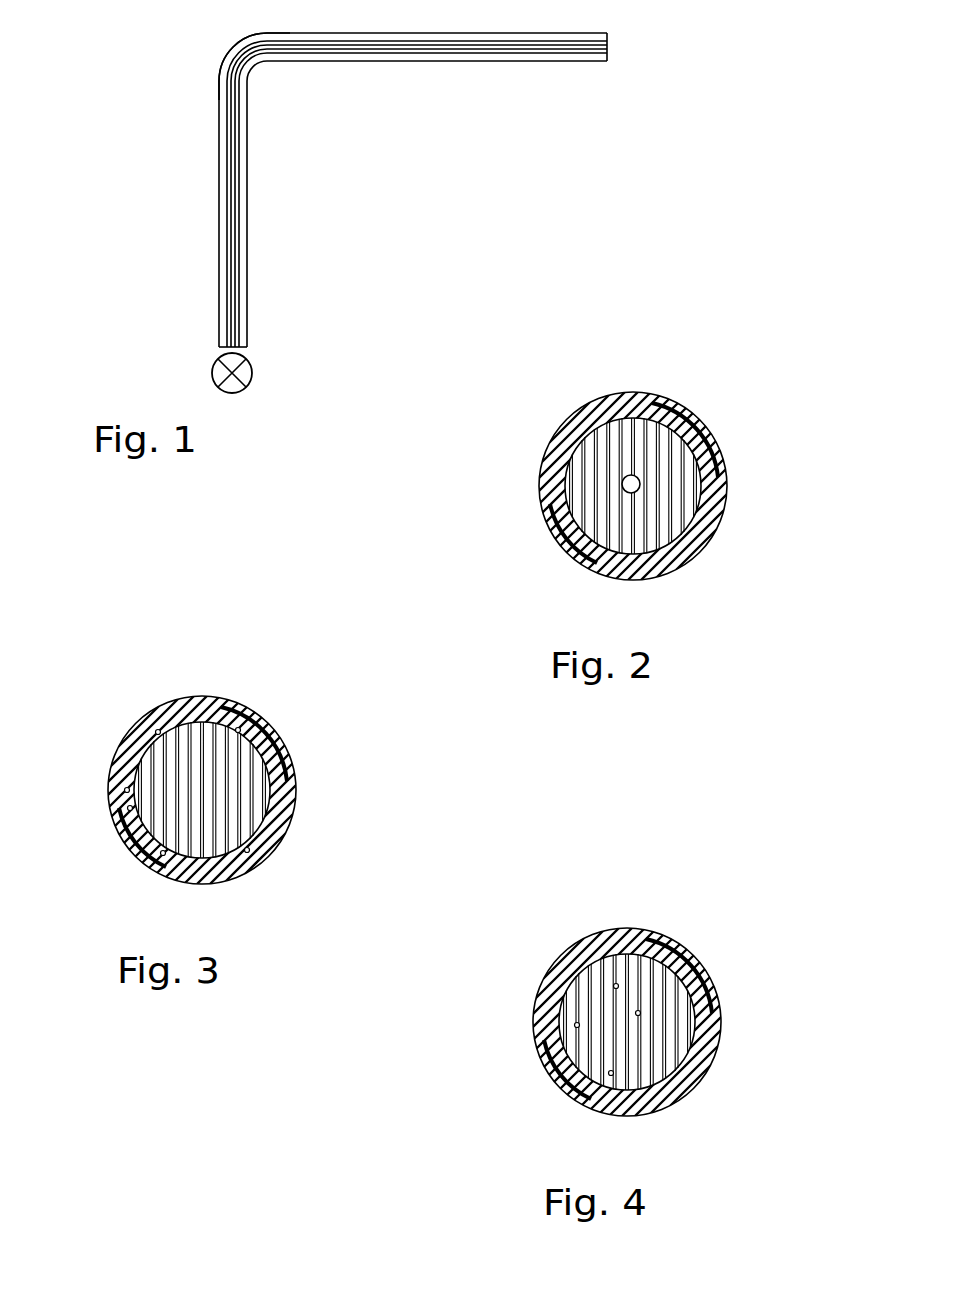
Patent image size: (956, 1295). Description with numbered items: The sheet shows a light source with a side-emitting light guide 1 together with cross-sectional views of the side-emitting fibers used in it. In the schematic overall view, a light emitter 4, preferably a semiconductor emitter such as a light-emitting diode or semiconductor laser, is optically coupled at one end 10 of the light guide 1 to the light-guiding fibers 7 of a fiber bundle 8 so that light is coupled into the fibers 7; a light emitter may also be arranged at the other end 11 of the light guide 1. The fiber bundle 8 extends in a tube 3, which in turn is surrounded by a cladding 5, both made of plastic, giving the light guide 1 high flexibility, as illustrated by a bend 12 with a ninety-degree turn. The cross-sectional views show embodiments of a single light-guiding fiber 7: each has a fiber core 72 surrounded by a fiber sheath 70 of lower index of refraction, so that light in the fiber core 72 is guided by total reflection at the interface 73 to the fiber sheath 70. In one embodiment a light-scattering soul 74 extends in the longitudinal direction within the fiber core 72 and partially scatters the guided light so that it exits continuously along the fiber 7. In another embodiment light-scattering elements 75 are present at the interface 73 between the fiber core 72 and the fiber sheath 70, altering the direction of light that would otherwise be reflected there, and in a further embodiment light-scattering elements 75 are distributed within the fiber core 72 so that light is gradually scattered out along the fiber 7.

In FIG. 1, the side-emitting light guide 1 is at (247, 152).
In FIG. 1, the tube 3 is at (487, 52).
In FIG. 1, the light emitter 4 is at (256, 376).
In FIG. 1, the cladding 5 is at (247, 240).
In FIG. 1, the light-guiding fiber 7 is at (433, 50).
In FIG. 2, the light-guiding fiber 7 is at (596, 382).
In FIG. 3, the light-guiding fiber 7 is at (163, 686).
In FIG. 4, the light-guiding fiber 7 is at (592, 918).
In FIG. 1, the fiber bundle 8 is at (358, 50).
In FIG. 1, the end of the light guide 10 is at (195, 330).
In FIG. 1, the end of the light guide 11 is at (579, 84).
In FIG. 1, the bend 12 is at (208, 62).
In FIG. 2, the fiber sheath 70 is at (695, 432).
In FIG. 3, the fiber sheath 70 is at (260, 735).
In FIG. 4, the fiber sheath 70 is at (692, 972).
In FIG. 2, the fiber core 72 is at (682, 492).
In FIG. 3, the fiber core 72 is at (250, 797).
In FIG. 4, the fiber core 72 is at (676, 1030).
In FIG. 2, the interface 73 is at (672, 553).
In FIG. 3, the interface 73 is at (258, 830).
In FIG. 4, the interface 73 is at (690, 1060).
In FIG. 2, the light-scattering soul 74 is at (620, 490).
In FIG. 3, the light-scattering elements 75 is at (163, 855).
In FIG. 4, the light-scattering elements 75 is at (612, 1075).